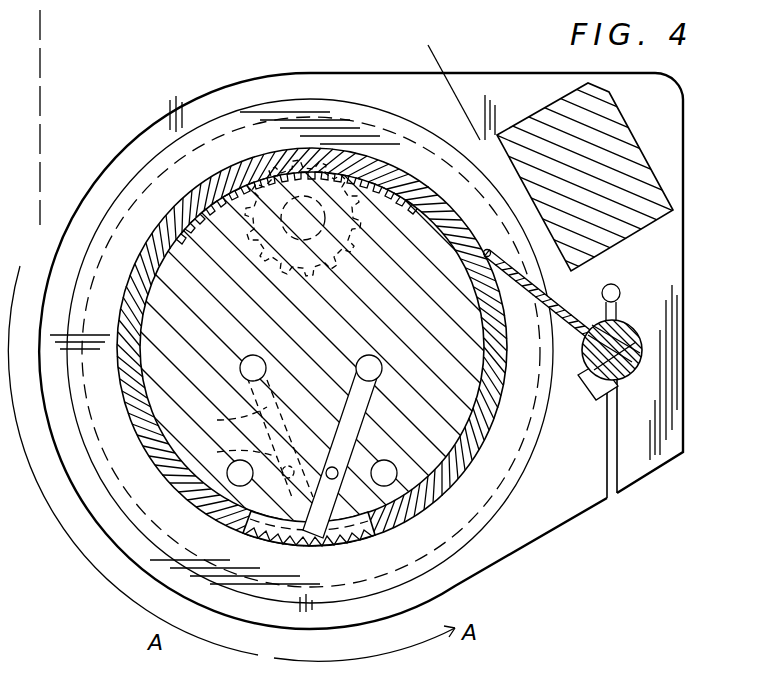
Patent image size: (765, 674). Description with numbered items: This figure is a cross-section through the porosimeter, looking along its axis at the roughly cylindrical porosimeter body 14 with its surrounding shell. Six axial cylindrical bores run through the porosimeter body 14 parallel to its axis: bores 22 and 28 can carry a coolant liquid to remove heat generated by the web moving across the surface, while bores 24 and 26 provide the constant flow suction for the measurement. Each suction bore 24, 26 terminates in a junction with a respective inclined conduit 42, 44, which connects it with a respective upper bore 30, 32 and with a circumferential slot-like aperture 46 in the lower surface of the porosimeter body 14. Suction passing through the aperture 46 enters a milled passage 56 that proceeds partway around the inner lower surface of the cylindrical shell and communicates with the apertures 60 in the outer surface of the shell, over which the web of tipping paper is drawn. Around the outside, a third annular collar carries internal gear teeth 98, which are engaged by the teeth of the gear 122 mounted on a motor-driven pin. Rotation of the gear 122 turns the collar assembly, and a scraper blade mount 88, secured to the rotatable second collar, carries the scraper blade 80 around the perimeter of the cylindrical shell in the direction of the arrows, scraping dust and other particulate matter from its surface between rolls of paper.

The porosimeter body 14 is at (190, 245).
The cylindrical bore 22 is at (397, 478).
The cylindrical bore 24 is at (329, 466).
The cylindrical bore 26 is at (230, 466).
The cylindrical bore 28 is at (200, 516).
The upper bore 30 is at (374, 358).
The upper bore 32 is at (245, 360).
The inclined conduit 42 is at (363, 395).
The inclined conduit 44 is at (222, 418).
The circumferential slot-like aperture 46 is at (246, 524).
The milled passage 56 is at (368, 530).
The apertures 60 is at (327, 546).
The scraper blade 80 is at (575, 315).
The scraper blade mount 88 is at (684, 275).
The gear teeth 98 is at (398, 165).
The gear 122 is at (330, 185).